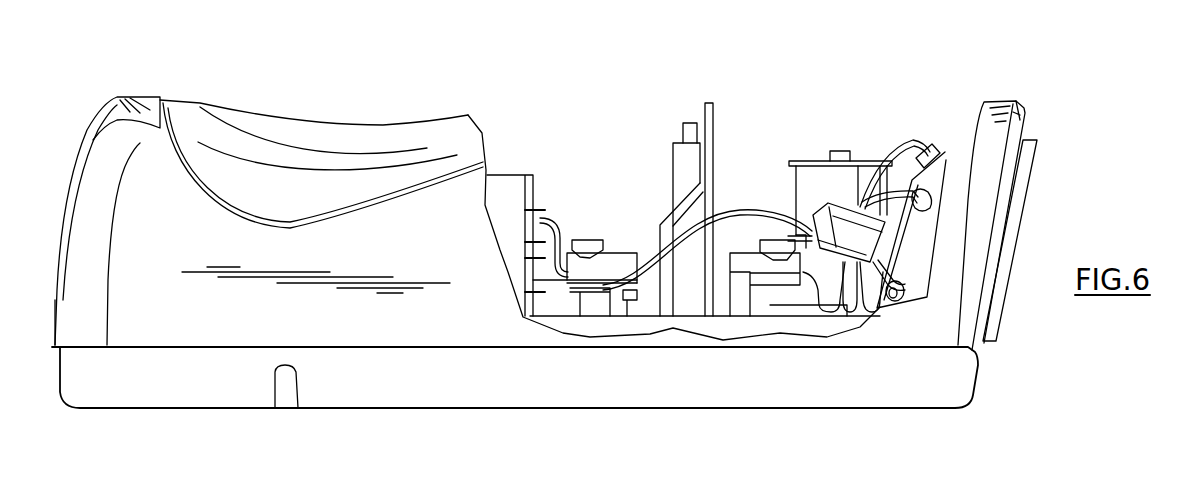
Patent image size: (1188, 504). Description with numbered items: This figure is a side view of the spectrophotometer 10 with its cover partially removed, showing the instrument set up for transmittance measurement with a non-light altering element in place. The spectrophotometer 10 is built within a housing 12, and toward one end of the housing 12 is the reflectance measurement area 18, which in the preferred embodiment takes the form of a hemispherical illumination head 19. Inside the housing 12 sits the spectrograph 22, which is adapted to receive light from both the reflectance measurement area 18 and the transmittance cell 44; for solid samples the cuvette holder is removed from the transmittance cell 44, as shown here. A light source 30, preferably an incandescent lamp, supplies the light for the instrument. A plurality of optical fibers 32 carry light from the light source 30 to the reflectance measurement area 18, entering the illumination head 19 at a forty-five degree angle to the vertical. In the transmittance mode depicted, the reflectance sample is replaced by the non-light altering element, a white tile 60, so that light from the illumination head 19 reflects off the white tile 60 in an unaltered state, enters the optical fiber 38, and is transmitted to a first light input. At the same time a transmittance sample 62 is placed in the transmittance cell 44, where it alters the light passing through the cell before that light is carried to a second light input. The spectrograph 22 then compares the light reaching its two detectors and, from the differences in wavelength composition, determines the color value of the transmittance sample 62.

The spectrophotometer 10 is at (638, 74).
The housing 12 is at (523, 393).
The reflectance measurement area 18 is at (1038, 126).
The hemispherical illumination head 19 is at (914, 158).
The spectrograph 22 is at (504, 182).
The light source 30 is at (813, 174).
The optical fibers 32 is at (898, 147).
The optical fiber 38 is at (725, 206).
The transmittance cell 44 is at (677, 160).
The white tile 60 is at (1022, 187).
The transmittance sample 62 is at (683, 128).